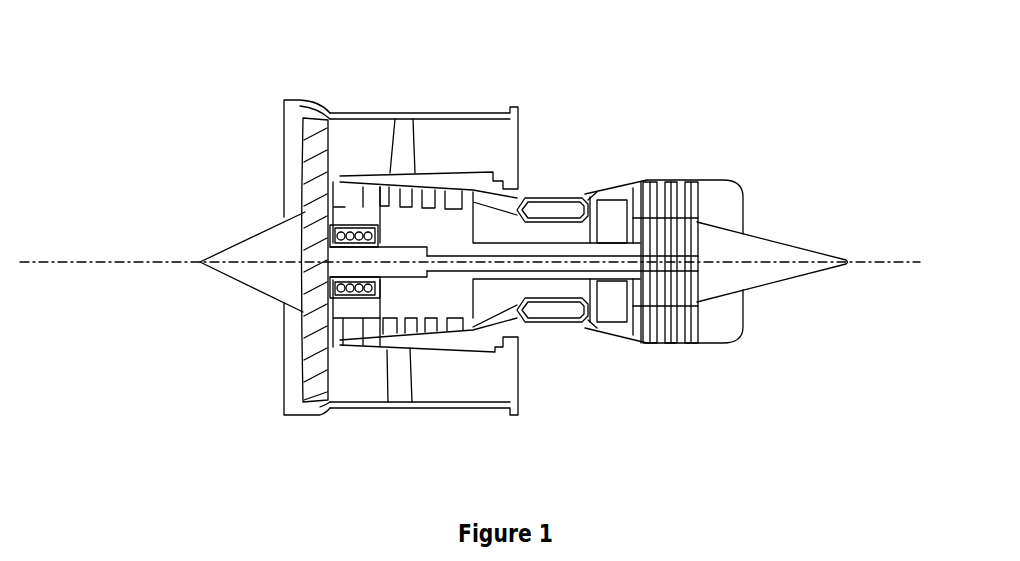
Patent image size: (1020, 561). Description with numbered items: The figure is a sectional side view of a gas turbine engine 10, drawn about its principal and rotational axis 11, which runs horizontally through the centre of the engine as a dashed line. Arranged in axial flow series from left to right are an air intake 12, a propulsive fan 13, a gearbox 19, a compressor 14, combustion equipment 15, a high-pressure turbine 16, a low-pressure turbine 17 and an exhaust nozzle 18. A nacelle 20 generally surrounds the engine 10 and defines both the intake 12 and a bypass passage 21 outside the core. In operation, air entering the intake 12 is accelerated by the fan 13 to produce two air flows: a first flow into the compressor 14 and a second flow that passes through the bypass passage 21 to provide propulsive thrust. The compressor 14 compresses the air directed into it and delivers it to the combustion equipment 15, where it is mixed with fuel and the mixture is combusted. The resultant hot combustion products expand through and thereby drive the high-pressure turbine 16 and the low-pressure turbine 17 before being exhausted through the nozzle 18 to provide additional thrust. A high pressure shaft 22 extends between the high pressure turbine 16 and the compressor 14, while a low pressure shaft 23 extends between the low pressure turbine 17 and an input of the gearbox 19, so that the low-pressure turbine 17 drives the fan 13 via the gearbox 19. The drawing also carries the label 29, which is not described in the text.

The gas turbine engine 10 is at (593, 140).
The principal and rotational axis 11 is at (200, 262).
The air intake 12 is at (285, 157).
The propulsive fan 13 is at (327, 132).
The compressor 14 is at (457, 218).
The combustion equipment 15 is at (543, 205).
The high-pressure turbine 16 is at (648, 182).
The low-pressure turbine 17 is at (697, 222).
The exhaust nozzle 18 is at (728, 212).
The gearbox 19 is at (343, 238).
The nacelle 20 is at (357, 410).
The bypass passage 21 is at (460, 388).
The high pressure shaft 22 is at (548, 283).
The low pressure shaft 23 is at (444, 266).
The hub 29 is at (357, 267).